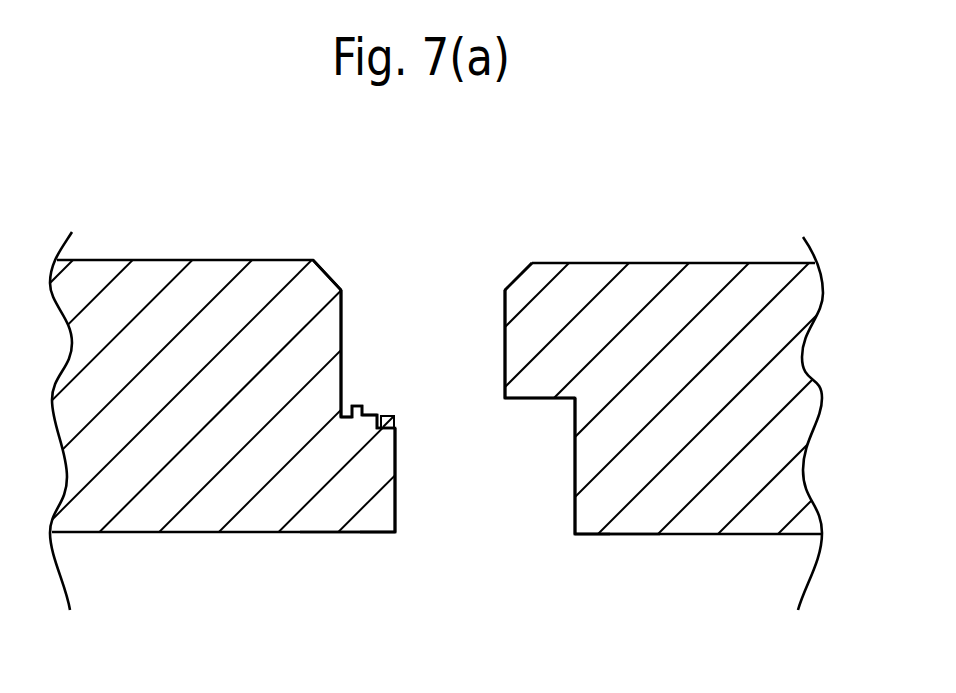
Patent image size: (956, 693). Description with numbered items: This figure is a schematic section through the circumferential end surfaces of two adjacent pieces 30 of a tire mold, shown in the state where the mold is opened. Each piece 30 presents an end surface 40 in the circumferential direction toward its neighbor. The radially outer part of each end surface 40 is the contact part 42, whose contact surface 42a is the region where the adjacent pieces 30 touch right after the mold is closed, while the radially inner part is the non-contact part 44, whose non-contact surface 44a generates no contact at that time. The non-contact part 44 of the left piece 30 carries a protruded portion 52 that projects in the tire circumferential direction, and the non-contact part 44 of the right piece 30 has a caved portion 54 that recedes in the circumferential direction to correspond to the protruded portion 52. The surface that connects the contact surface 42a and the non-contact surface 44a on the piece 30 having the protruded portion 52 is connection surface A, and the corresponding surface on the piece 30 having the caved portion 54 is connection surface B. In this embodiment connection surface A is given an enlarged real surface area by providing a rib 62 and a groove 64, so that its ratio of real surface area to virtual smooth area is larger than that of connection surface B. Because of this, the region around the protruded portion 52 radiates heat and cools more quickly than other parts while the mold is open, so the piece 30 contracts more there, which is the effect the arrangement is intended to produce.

The piece 30 is at (157, 512).
The end surface in the circumferential direction 40 is at (356, 360).
The contact part 42 is at (322, 282).
The contact surface 42a is at (343, 335).
The non-contact part 44 is at (347, 507).
The non-contact surface 44a is at (395, 479).
The protruded portion 52 is at (375, 544).
The caved portion 54 is at (584, 545).
The rib 62 is at (357, 406).
The groove 64 is at (393, 424).
The connection surface A is at (366, 416).
The connection surface B is at (545, 399).